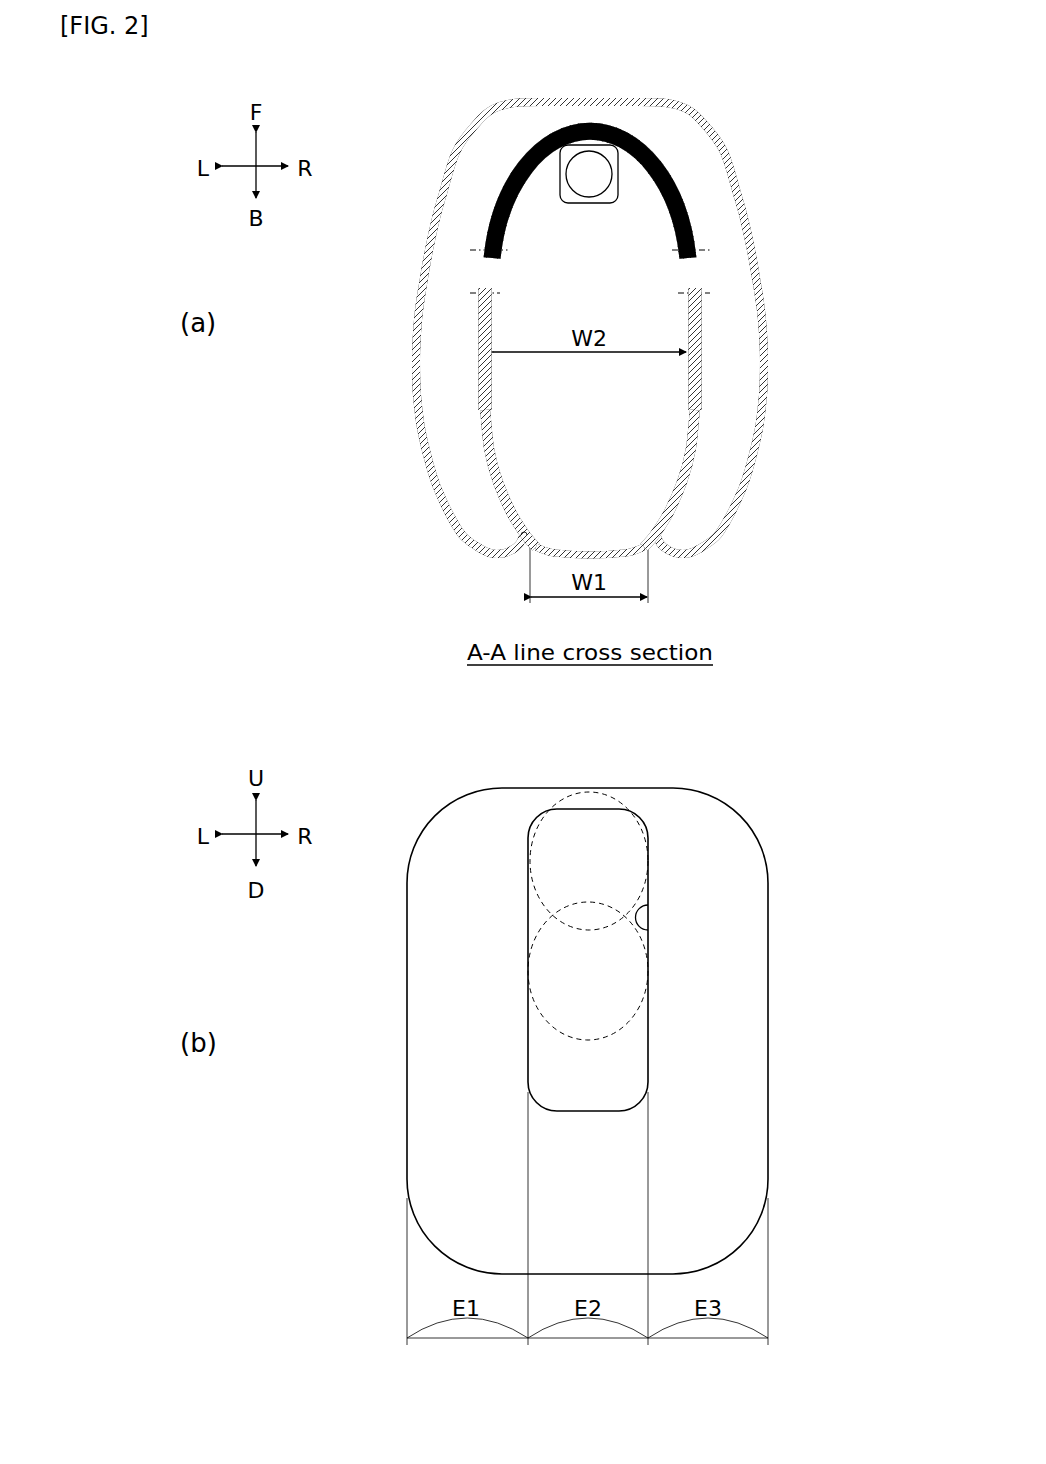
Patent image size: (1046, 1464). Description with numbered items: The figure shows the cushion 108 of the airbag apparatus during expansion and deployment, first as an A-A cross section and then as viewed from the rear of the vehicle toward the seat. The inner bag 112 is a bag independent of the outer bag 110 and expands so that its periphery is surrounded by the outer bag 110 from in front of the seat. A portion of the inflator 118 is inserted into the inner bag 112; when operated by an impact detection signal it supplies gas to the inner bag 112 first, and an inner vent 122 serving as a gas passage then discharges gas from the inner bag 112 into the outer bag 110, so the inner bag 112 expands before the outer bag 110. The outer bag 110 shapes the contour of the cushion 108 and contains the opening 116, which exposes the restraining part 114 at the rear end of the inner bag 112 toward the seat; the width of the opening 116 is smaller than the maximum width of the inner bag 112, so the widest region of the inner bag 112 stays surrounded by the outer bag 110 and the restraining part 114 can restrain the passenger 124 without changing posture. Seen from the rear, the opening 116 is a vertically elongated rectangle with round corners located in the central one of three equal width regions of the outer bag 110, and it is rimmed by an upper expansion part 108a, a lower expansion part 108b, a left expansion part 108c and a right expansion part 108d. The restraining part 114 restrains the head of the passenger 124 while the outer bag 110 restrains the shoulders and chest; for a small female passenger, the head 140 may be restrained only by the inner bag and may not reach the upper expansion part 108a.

The cushion 108 is at (395, 157).
The upper expansion part 108a is at (545, 805).
The lower expansion part 108b is at (590, 1135).
The left expansion part 108c is at (430, 975).
The right expansion part 108d is at (725, 968).
The outer bag 110 is at (412, 350).
The inner bag 112 is at (680, 485).
The restraining part 114 is at (607, 550).
The opening 116 is at (524, 548).
The inflator 118 is at (613, 172).
The inner vent 122 is at (690, 260).
The passenger 124 is at (608, 800).
The head 140 is at (640, 1020).